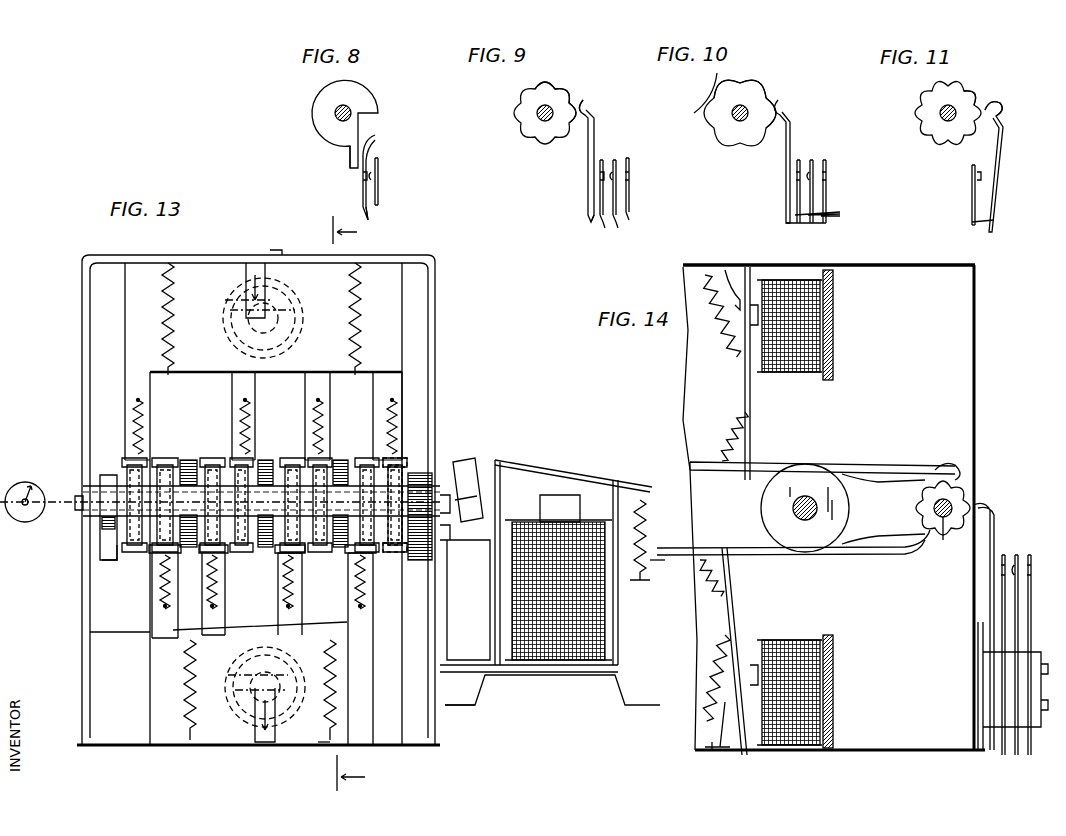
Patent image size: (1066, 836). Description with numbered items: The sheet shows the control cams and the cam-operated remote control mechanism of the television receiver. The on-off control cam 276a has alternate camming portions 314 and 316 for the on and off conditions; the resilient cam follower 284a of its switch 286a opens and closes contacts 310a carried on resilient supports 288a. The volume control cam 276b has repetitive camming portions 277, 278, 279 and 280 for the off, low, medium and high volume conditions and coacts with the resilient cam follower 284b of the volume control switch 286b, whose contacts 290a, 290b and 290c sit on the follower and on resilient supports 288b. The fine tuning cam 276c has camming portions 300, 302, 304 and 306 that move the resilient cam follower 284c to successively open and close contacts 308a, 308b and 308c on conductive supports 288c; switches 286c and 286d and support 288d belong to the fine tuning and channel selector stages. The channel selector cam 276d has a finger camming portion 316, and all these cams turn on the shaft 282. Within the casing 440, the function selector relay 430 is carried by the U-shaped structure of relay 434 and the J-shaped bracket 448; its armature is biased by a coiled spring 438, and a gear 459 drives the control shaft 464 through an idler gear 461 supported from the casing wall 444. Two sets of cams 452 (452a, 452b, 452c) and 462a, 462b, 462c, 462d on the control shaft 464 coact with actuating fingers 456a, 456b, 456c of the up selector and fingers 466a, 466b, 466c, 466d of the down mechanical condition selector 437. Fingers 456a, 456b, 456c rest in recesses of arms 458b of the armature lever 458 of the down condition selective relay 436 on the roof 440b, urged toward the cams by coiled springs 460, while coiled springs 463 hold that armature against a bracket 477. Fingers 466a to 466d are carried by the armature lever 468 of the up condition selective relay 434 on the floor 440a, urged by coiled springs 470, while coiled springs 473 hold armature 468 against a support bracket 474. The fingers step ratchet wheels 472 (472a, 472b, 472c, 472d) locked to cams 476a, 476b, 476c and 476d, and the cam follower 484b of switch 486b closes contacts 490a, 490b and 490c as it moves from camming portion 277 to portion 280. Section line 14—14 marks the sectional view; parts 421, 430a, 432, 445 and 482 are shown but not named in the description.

In FIG. 13, the section line 14 is at (361, 503).
In FIG. 11, the on-off control cam 276a is at (950, 82).
In FIG. 10, the volume control cam 276b is at (708, 118).
In FIG. 9, the fine tuning cam 276c is at (518, 118).
In FIG. 8, the channel selector cam 276d is at (310, 116).
In FIG. 10, the camming portion 277 is at (782, 88).
In FIG. 10, the camming portion 278 is at (760, 78).
In FIG. 10, the camming portion 279 is at (737, 76).
In FIG. 10, the camming portion 280 is at (722, 88).
In FIG. 8, the shaft 282 is at (346, 105).
In FIG. 9, the shaft 282 is at (539, 110).
In FIG. 10, the shaft 282 is at (736, 120).
In FIG. 11, the shaft 282 is at (950, 120).
In FIG. 11, the resilient cam follower 284a is at (1000, 135).
In FIG. 10, the resilient cam follower 284b is at (787, 128).
In FIG. 8, the resilient cam follower 284c is at (370, 145).
In FIG. 9, the resilient cam follower 284c is at (598, 136).
In FIG. 11, the switch 286a is at (1018, 180).
In FIG. 10, the volume control switch 286b is at (848, 184).
In FIG. 9, the switch contact assembly 286c is at (641, 208).
In FIG. 8, the switch contact assembly 286d is at (389, 178).
In FIG. 11, the resilient supports 288a is at (1000, 222).
In FIG. 10, the resilient supports 288b is at (840, 209).
In FIG. 9, the resilient conductive supports 288c is at (600, 222).
In FIG. 8, the contact leaf 288d is at (370, 213).
In FIG. 10, the contacts 290a is at (798, 160).
In FIG. 10, the contacts 290b is at (812, 160).
In FIG. 10, the contacts 290c is at (826, 163).
In FIG. 9, the camming portion 300 is at (538, 152).
In FIG. 9, the camming portion 302 is at (558, 152).
In FIG. 9, the camming portion 304 is at (578, 148).
In FIG. 9, the camming portion 306 is at (590, 112).
In FIG. 9, the contacts 308a is at (598, 205).
In FIG. 9, the contacts 308b is at (616, 180).
In FIG. 9, the contacts 308c is at (628, 158).
In FIG. 11, the contacts 310a is at (988, 158).
In FIG. 11, the camming portion 314 is at (975, 98).
In FIG. 8, the camming portion 316 is at (379, 160).
In FIG. 11, the camming portion 316 is at (998, 108).
In FIG. 13, the coupling block 421 is at (452, 470).
In FIG. 13, the function selector relay 430 is at (585, 701).
In FIG. 13, the motor coil 430a is at (550, 650).
In FIG. 13, the motor terminal 432 is at (540, 508).
In FIG. 13, the up condition selective relay 434 is at (277, 745).
In FIG. 14, the up condition selective relay 434 is at (805, 684).
In FIG. 13, the down condition selective relay 436 is at (255, 262).
In FIG. 14, the down condition selective relay 436 is at (815, 336).
In FIG. 13, the down mechanical condition selector 437 is at (542, 470).
In FIG. 13, the coiled spring 438 is at (648, 537).
In FIG. 14, the coiled spring 438 is at (668, 540).
In FIG. 13, the casing 440 is at (432, 752).
In FIG. 14, the casing 440 is at (952, 766).
In FIG. 14, the casing floor 440a is at (925, 752).
In FIG. 14, the casing roof 440b is at (908, 252).
In FIG. 13, the casing wall 444 is at (438, 722).
In FIG. 13, the frame side wall 445 is at (82, 662).
In FIG. 13, the J-shaped bracket 448 is at (452, 665).
In FIG. 13, the cams 452 is at (117, 565).
In FIG. 13, the cam 452a is at (381, 645).
In FIG. 13, the cam 452b is at (310, 590).
In FIG. 14, the cam 452b is at (773, 510).
In FIG. 13, the cam 452c is at (233, 590).
In FIG. 13, the actuating finger 456a is at (390, 440).
In FIG. 13, the actuating finger 456b is at (315, 430).
In FIG. 14, the actuating finger 456b is at (845, 488).
In FIG. 13, the actuating finger 456c is at (233, 425).
In FIG. 14, the actuating finger 456c is at (890, 466).
In FIG. 13, the armature lever 458 is at (405, 330).
In FIG. 14, the armature lever 458 is at (760, 397).
In FIG. 13, the arms 458b is at (245, 392).
In FIG. 13, the gear 459 is at (410, 560).
In FIG. 13, the coiled springs 460 is at (322, 420).
In FIG. 14, the coiled springs 460 is at (720, 435).
In FIG. 13, the idler gear 461 is at (380, 592).
In FIG. 13, the cam 462a is at (405, 475).
In FIG. 13, the cam 462b is at (288, 585).
In FIG. 14, the cam 462b is at (778, 510).
In FIG. 13, the cam 462c is at (222, 550).
In FIG. 13, the cam 462d is at (150, 550).
In FIG. 13, the coiled springs 463 is at (370, 318).
In FIG. 14, the coiled springs 463 is at (705, 280).
In FIG. 13, the control shaft 464 is at (80, 512).
In FIG. 13, the actuating finger 466a is at (357, 592).
In FIG. 13, the actuating finger 466b is at (290, 600).
In FIG. 14, the actuating finger 466b is at (866, 522).
In FIG. 13, the actuating finger 466c is at (285, 586).
In FIG. 14, the actuating finger 466c is at (915, 548).
In FIG. 13, the actuating finger 466d is at (162, 578).
In FIG. 13, the armature lever 468 is at (252, 622).
In FIG. 14, the armature lever 468 is at (747, 755).
In FIG. 13, the coiled springs 470 is at (170, 595).
In FIG. 14, the coiled springs 470 is at (700, 592).
In FIG. 13, the dial 472 is at (32, 523).
In FIG. 13, the ratchet wheel 472a is at (362, 465).
In FIG. 13, the ratchet wheel 472b is at (320, 505).
In FIG. 14, the ratchet wheel 472b is at (955, 530).
In FIG. 13, the ratchet wheel 472c is at (215, 460).
In FIG. 13, the ratchet wheel 472d is at (166, 466).
In FIG. 13, the coiled springs 473 is at (336, 688).
In FIG. 14, the coiled springs 473 is at (710, 670).
In FIG. 13, the support bracket 474 is at (265, 722).
In FIG. 14, the support bracket 474 is at (727, 747).
In FIG. 13, the cam 476a is at (345, 450).
In FIG. 13, the cam 476b is at (265, 460).
In FIG. 14, the cam 476b is at (968, 490).
In FIG. 13, the cam 476c is at (189, 460).
In FIG. 13, the cam 476d is at (106, 480).
In FIG. 13, the bracket 477 is at (268, 290).
In FIG. 14, the bracket 477 is at (725, 270).
In FIG. 13, the shaft end 482 is at (78, 495).
In FIG. 14, the shaft end 482 is at (940, 545).
In FIG. 14, the cam follower 484b is at (985, 500).
In FIG. 14, the contact block 486b is at (964, 666).
In FIG. 14, the contacts 490a is at (1035, 545).
In FIG. 14, the contacts 490b is at (1040, 525).
In FIG. 14, the contacts 490c is at (1031, 555).